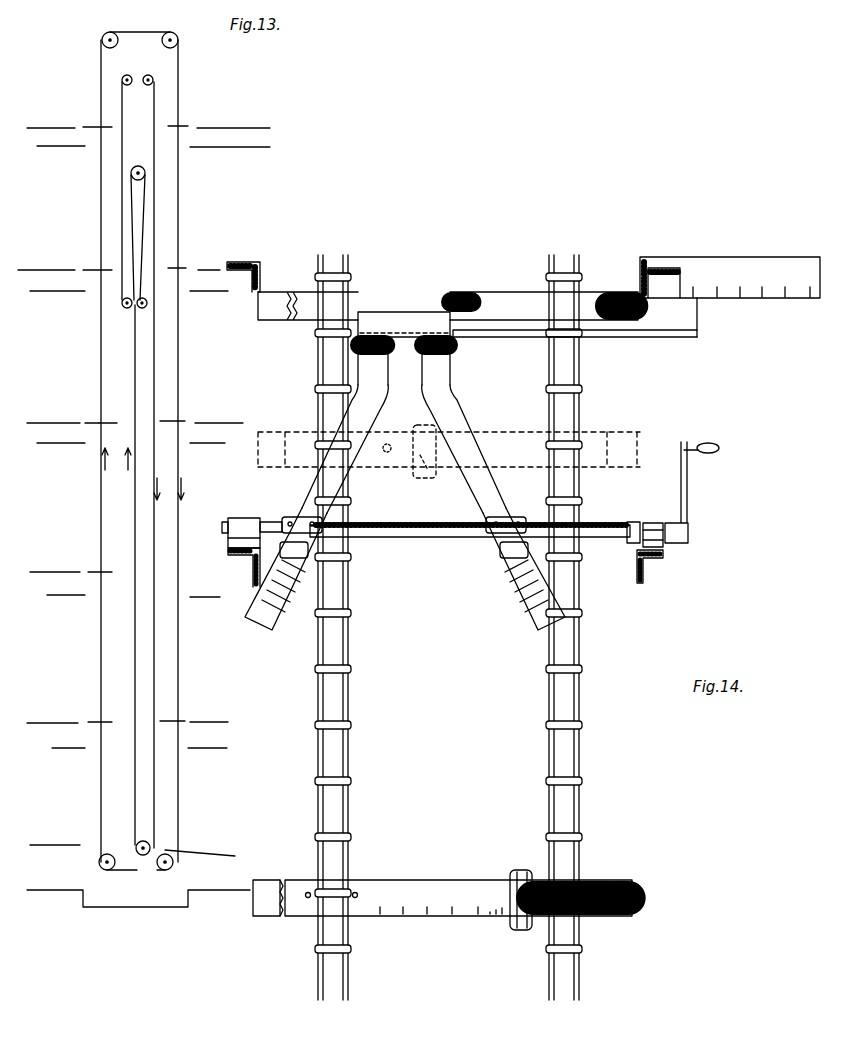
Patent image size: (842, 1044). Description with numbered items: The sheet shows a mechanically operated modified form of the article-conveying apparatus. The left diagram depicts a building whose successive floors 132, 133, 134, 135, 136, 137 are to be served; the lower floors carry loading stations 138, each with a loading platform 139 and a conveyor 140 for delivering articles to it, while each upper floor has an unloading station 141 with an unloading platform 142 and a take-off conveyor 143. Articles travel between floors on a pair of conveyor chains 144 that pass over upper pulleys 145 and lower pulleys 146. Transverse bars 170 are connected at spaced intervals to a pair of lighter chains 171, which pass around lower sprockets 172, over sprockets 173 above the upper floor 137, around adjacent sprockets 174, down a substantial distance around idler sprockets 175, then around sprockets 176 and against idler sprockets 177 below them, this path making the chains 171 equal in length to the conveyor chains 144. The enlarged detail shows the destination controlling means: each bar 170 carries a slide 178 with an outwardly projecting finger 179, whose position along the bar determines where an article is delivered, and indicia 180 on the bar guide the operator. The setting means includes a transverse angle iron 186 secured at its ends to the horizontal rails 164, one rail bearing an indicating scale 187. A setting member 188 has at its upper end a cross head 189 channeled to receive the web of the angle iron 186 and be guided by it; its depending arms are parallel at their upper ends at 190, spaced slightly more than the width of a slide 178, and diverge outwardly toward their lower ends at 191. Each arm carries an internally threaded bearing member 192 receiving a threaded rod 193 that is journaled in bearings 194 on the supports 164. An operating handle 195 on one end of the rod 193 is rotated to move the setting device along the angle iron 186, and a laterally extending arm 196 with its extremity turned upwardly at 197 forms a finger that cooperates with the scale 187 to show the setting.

In FIG. 13, the floor 132 is at (97, 907).
In FIG. 13, the floor 133 is at (78, 748).
In FIG. 13, the floor 134 is at (68, 601).
In FIG. 13, the floor 135 is at (79, 443).
In FIG. 13, the floor 136 is at (78, 291).
In FIG. 13, the upper floor 137 is at (66, 146).
In FIG. 13, the loading station 138 is at (96, 415).
In FIG. 13, the loading platform 139 is at (108, 852).
In FIG. 13, the conveyor 140 is at (48, 845).
In FIG. 13, the unloading station 141 is at (189, 717).
In FIG. 13, the unloading platform 142 is at (182, 708).
In FIG. 13, the take-off conveyor 143 is at (217, 728).
In FIG. 13, the conveyor chains 144 is at (185, 813).
In FIG. 13, the upper pulleys 145 is at (178, 36).
In FIG. 13, the lower pulleys 146 is at (178, 858).
In FIG. 14, the horizontal rails 164 is at (641, 290).
In FIG. 14, the transverse bars 170 is at (643, 452).
In FIG. 13, the chains 171 is at (136, 508).
In FIG. 14, the chains 171 is at (349, 762).
In FIG. 13, the lower sprockets 172 is at (143, 858).
In FIG. 13, the sprockets 173 is at (154, 79).
In FIG. 13, the sprockets 174 is at (122, 79).
In FIG. 13, the idler sprockets 175 is at (124, 307).
In FIG. 13, the sprockets 176 is at (146, 172).
In FIG. 13, the idler sprockets 177 is at (147, 304).
In FIG. 14, the slide 178 is at (418, 482).
In FIG. 14, the finger 179 is at (418, 462).
In FIG. 14, the indicia 180 is at (389, 440).
In FIG. 14, the transverse angle iron 186 is at (500, 300).
In FIG. 14, the indicating scale 187 is at (733, 266).
In FIG. 14, the setting member 188 is at (485, 390).
In FIG. 14, the cross head 189 is at (400, 312).
In FIG. 14, the parallel arm portions 190 is at (452, 344).
In FIG. 14, the diverging arm portions 191 is at (314, 480).
In FIG. 14, the internally threaded bearing member 192 is at (278, 522).
In FIG. 14, the threaded rod 193 is at (430, 538).
In FIG. 14, the bearings 194 is at (235, 517).
In FIG. 14, the operating handle 195 is at (690, 492).
In FIG. 14, the laterally extending arm 196 is at (630, 338).
In FIG. 14, the upturned finger 197 is at (699, 310).